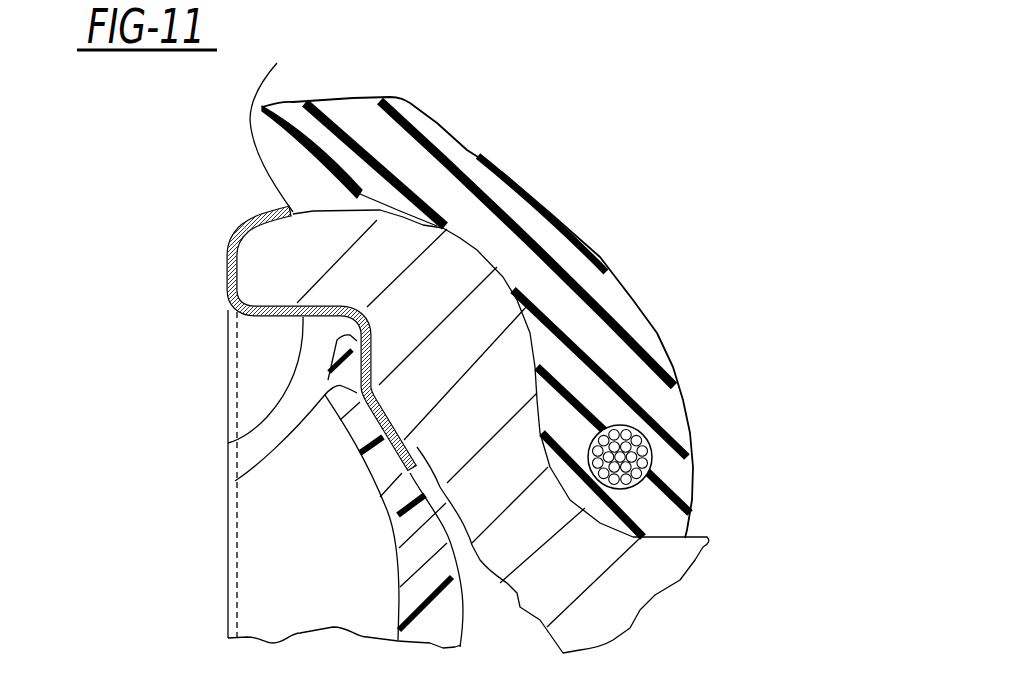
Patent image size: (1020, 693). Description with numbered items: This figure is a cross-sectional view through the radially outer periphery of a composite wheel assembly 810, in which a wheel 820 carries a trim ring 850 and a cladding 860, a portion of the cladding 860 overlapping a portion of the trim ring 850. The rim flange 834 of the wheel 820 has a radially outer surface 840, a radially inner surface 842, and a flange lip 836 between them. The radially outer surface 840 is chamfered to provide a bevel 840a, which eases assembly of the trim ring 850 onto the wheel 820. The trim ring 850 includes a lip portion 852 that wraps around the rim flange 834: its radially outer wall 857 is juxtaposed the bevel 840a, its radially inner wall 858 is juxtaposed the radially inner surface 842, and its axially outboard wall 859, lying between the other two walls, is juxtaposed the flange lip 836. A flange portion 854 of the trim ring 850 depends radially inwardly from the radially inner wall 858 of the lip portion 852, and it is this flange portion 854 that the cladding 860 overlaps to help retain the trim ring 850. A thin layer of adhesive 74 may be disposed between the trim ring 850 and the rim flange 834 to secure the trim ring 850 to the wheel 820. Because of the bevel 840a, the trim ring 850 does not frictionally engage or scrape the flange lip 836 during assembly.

The composite wheel assembly 810 is at (142, 191).
The radially outer surface 840 is at (347, 213).
The bevel 840a is at (303, 130).
The rim flange 834 is at (493, 377).
The wheel 820 is at (667, 612).
The radially outer wall 857 is at (253, 208).
The axially outboard wall 859 is at (227, 250).
The flange lip 836 is at (227, 275).
The lip portion 852 is at (227, 288).
The radially inner surface 842 is at (282, 314).
The radially inner wall 858 is at (250, 428).
The flange portion 854 is at (235, 481).
The trim ring 850 is at (258, 530).
The cladding 860 is at (400, 598).
The adhesive 74 is at (460, 647).